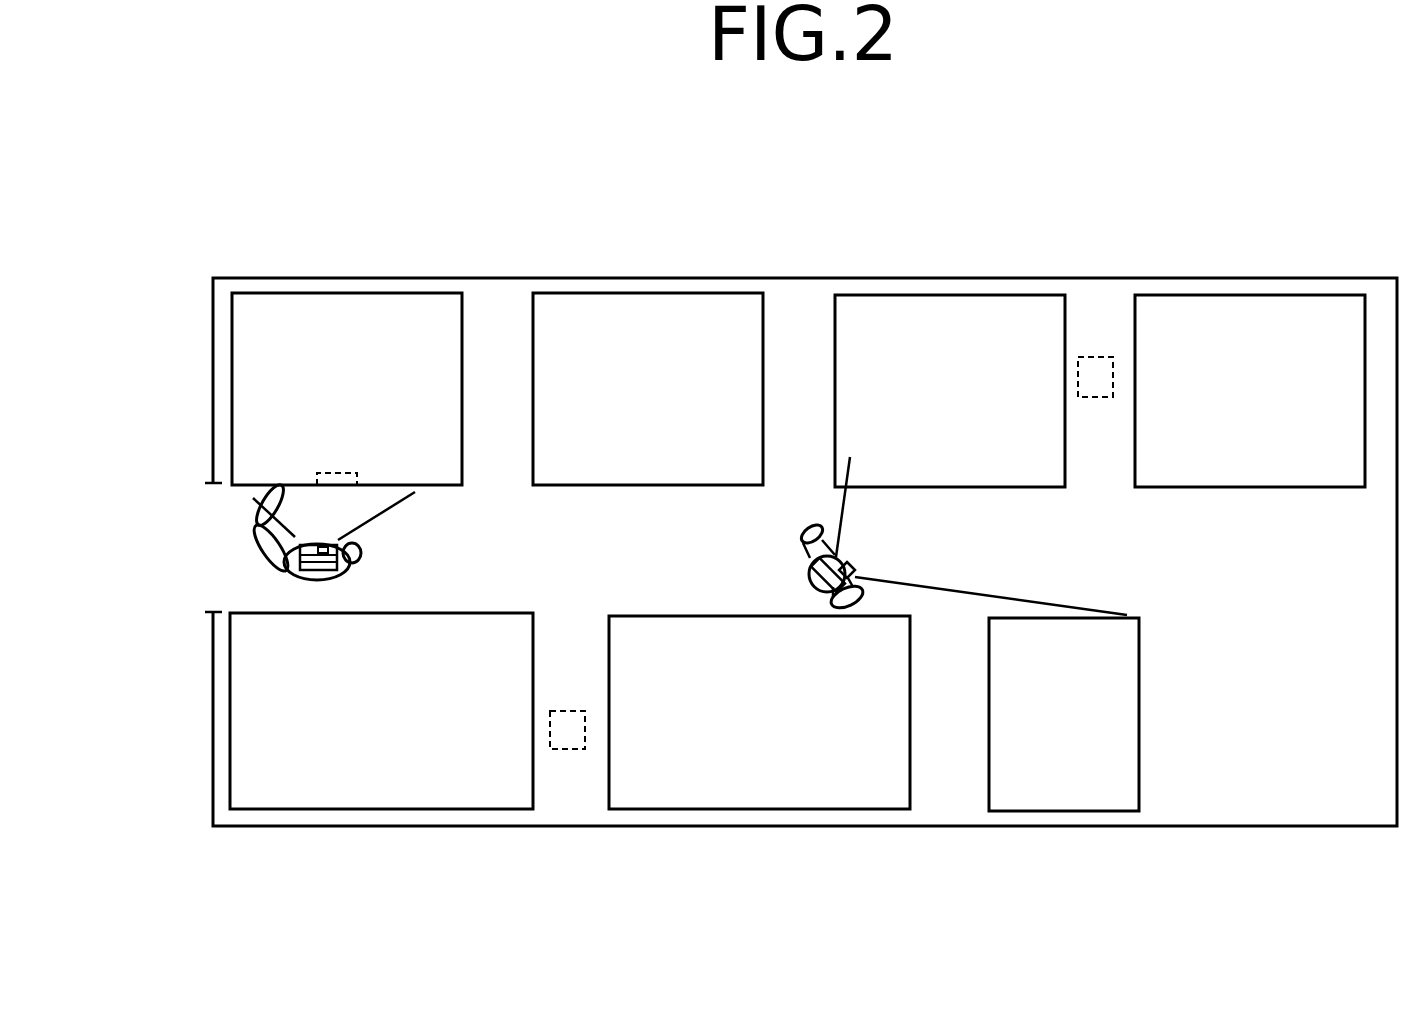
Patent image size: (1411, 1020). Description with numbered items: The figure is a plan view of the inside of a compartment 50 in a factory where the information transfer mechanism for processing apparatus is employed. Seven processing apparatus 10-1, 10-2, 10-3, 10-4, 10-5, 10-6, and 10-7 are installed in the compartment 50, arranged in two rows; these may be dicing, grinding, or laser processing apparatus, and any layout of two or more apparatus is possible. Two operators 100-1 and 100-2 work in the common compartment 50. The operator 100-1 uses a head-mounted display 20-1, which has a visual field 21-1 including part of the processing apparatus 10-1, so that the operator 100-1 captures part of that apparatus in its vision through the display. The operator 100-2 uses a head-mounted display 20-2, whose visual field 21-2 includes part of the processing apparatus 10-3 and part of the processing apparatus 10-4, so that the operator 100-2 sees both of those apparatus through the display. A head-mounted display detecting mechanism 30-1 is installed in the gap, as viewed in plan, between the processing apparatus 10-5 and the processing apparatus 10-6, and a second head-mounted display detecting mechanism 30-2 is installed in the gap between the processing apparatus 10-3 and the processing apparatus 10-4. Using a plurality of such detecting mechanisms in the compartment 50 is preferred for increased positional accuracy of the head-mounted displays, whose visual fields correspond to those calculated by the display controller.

The processing apparatus 10-1 is at (368, 291).
The processing apparatus 10-2 is at (648, 293).
The processing apparatus 10-3 is at (1000, 295).
The processing apparatus 10-4 is at (1253, 295).
The processing apparatus 10-5 is at (350, 809).
The processing apparatus 10-6 is at (775, 809).
The processing apparatus 10-7 is at (1061, 811).
The head-mounted display 20-1 is at (310, 587).
The head-mounted display 20-2 is at (810, 592).
The visual field 21-1 is at (300, 517).
The visual field 21-2 is at (868, 533).
The head-mounted display detecting mechanism 30-1 is at (570, 750).
The head-mounted display detecting mechanism 30-2 is at (1093, 357).
The compartment 50 is at (1138, 280).
The operator 100-1 is at (274, 485).
The operator 100-2 is at (911, 379).